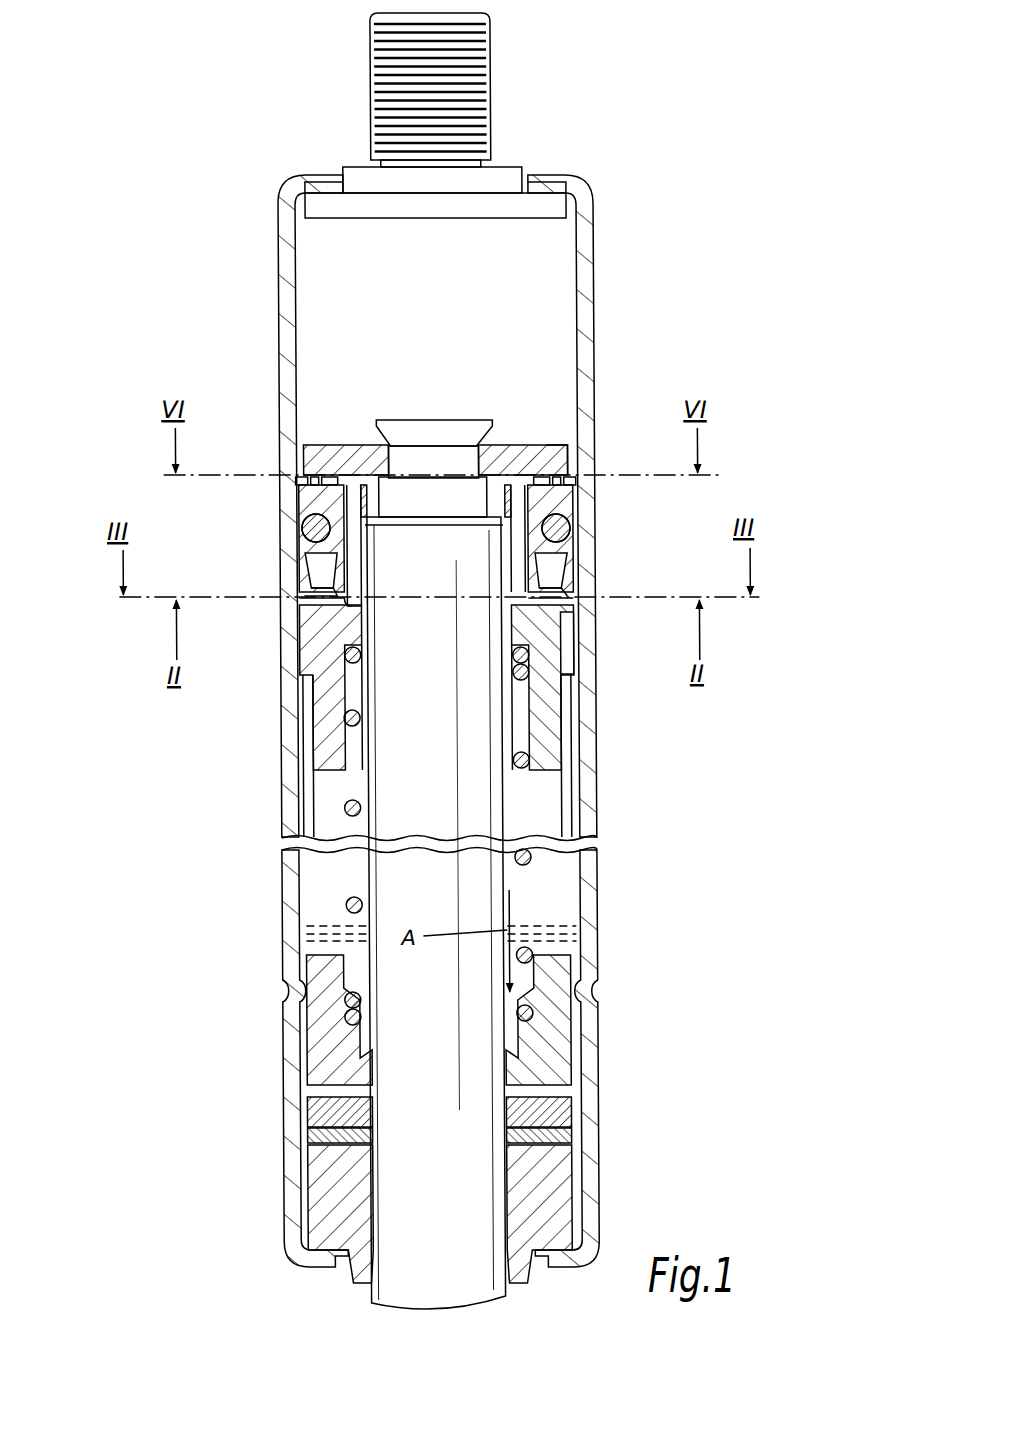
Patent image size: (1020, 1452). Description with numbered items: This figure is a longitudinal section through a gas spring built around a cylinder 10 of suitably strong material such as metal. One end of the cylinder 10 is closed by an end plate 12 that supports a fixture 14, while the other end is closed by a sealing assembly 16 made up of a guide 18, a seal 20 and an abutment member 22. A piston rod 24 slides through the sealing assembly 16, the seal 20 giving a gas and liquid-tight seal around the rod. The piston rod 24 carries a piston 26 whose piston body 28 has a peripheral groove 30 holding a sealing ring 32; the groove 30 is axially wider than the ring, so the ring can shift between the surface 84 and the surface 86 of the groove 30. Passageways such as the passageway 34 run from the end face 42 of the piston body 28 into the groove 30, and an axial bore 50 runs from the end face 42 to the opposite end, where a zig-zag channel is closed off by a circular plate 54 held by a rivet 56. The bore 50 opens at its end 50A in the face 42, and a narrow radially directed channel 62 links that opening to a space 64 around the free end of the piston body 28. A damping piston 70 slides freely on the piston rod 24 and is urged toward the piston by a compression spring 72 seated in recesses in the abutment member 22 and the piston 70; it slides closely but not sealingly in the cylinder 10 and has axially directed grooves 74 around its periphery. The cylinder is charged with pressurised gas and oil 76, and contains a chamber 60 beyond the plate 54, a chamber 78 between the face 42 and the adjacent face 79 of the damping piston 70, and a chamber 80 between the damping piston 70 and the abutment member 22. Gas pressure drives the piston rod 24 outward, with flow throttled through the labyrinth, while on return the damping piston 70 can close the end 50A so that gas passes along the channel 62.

The cylinder 10 is at (582, 306).
The end plate 12 is at (498, 176).
The fixture 14 is at (468, 76).
The sealing assembly 16 is at (562, 1170).
The guide 18 is at (566, 1212).
The seal 20 is at (566, 1115).
The abutment member 22 is at (566, 1042).
The piston rod 24 is at (492, 920).
The piston 26 is at (520, 432).
The piston body 28 is at (552, 492).
The peripheral groove 30 is at (318, 548).
The sealing ring 32 is at (560, 540).
The passageway 34 is at (562, 588).
The end face 42 is at (354, 628).
The bore 50 is at (305, 500).
The open end of the bore 50A is at (354, 603).
The circular plate 54 is at (566, 440).
The rivet 56 is at (417, 430).
The chamber 60 is at (326, 247).
The radially directed channel 62 is at (330, 592).
The space 64 is at (322, 572).
The damping piston 70 is at (556, 690).
The compression spring 72 is at (532, 856).
The axially directed grooves 74 is at (568, 652).
The oil 76 is at (332, 942).
The chamber 78 is at (305, 599).
The face 79 is at (320, 608).
The chamber 80 is at (320, 800).
The surface 84 is at (566, 522).
The surface 86 is at (556, 560).